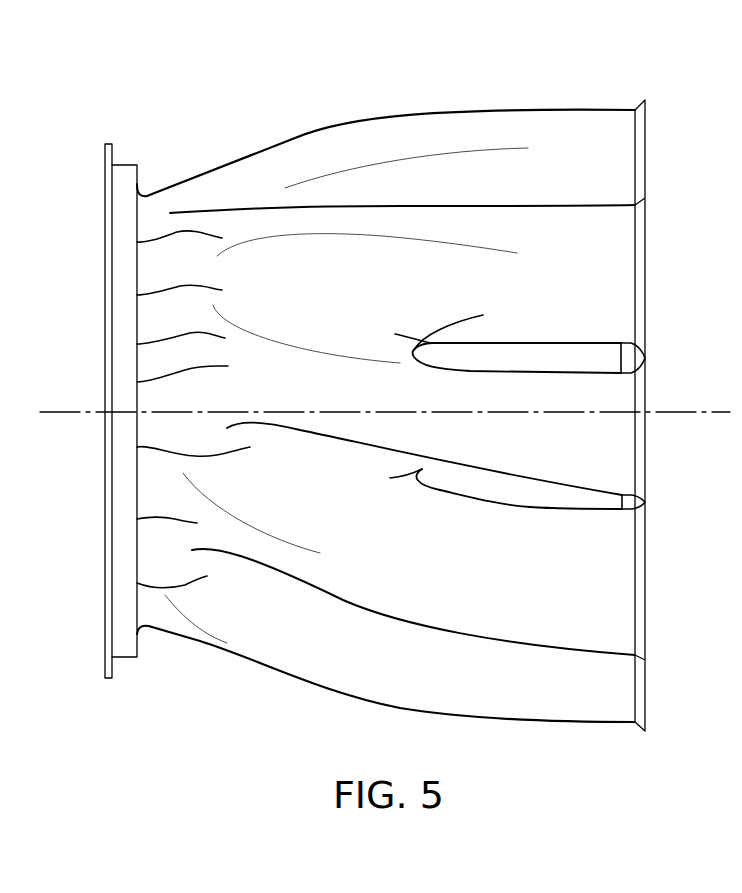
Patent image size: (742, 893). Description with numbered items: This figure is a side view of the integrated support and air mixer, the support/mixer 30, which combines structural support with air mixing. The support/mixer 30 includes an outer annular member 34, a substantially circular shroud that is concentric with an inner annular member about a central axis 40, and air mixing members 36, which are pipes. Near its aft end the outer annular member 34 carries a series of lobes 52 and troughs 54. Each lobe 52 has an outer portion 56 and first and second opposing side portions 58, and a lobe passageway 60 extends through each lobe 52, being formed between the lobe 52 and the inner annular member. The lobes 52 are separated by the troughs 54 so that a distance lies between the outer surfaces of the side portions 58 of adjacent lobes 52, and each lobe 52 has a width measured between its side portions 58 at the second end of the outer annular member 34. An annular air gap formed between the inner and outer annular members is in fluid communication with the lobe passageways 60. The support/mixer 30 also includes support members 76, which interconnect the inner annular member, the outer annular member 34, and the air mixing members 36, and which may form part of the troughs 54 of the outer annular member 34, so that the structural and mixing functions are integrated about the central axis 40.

The support/mixer 30 is at (298, 103).
The outer annular member 34 is at (145, 193).
The air mixing members 36 is at (597, 121).
The central axis 40 is at (655, 412).
The lobes 52 is at (137, 242).
The troughs 54 is at (137, 295).
The outer portion 56 is at (137, 382).
The first and second opposing side portions 58 is at (137, 344).
The lobe passageway 60 is at (236, 188).
The support members 76 is at (434, 350).